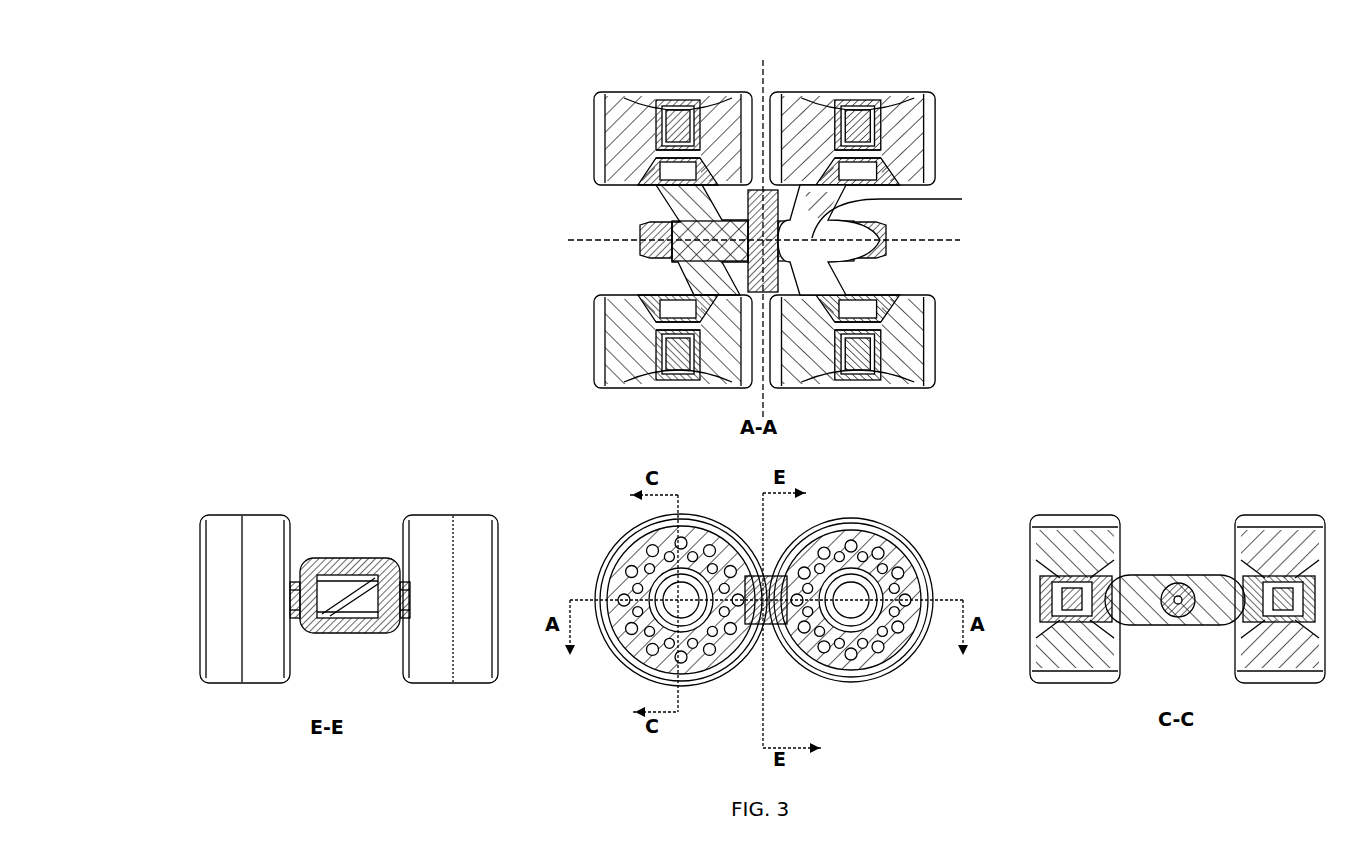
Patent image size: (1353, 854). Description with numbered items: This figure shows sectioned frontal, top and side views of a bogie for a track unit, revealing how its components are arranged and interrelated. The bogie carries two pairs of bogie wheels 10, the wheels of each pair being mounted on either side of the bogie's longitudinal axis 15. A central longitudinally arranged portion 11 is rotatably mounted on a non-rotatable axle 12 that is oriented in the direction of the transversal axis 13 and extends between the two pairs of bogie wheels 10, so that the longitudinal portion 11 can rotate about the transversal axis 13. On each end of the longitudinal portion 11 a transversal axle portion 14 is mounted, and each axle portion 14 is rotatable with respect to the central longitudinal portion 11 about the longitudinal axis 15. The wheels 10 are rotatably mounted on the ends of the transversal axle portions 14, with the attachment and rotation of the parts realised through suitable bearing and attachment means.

The bogie wheels 10 is at (611, 115).
The central longitudinal portion 11 is at (333, 643).
The non-rotatable axle 12 is at (749, 222).
The transversal axis 13 is at (766, 64).
The transversal axle portion 14 is at (666, 276).
The longitudinal axis 15 is at (581, 239).